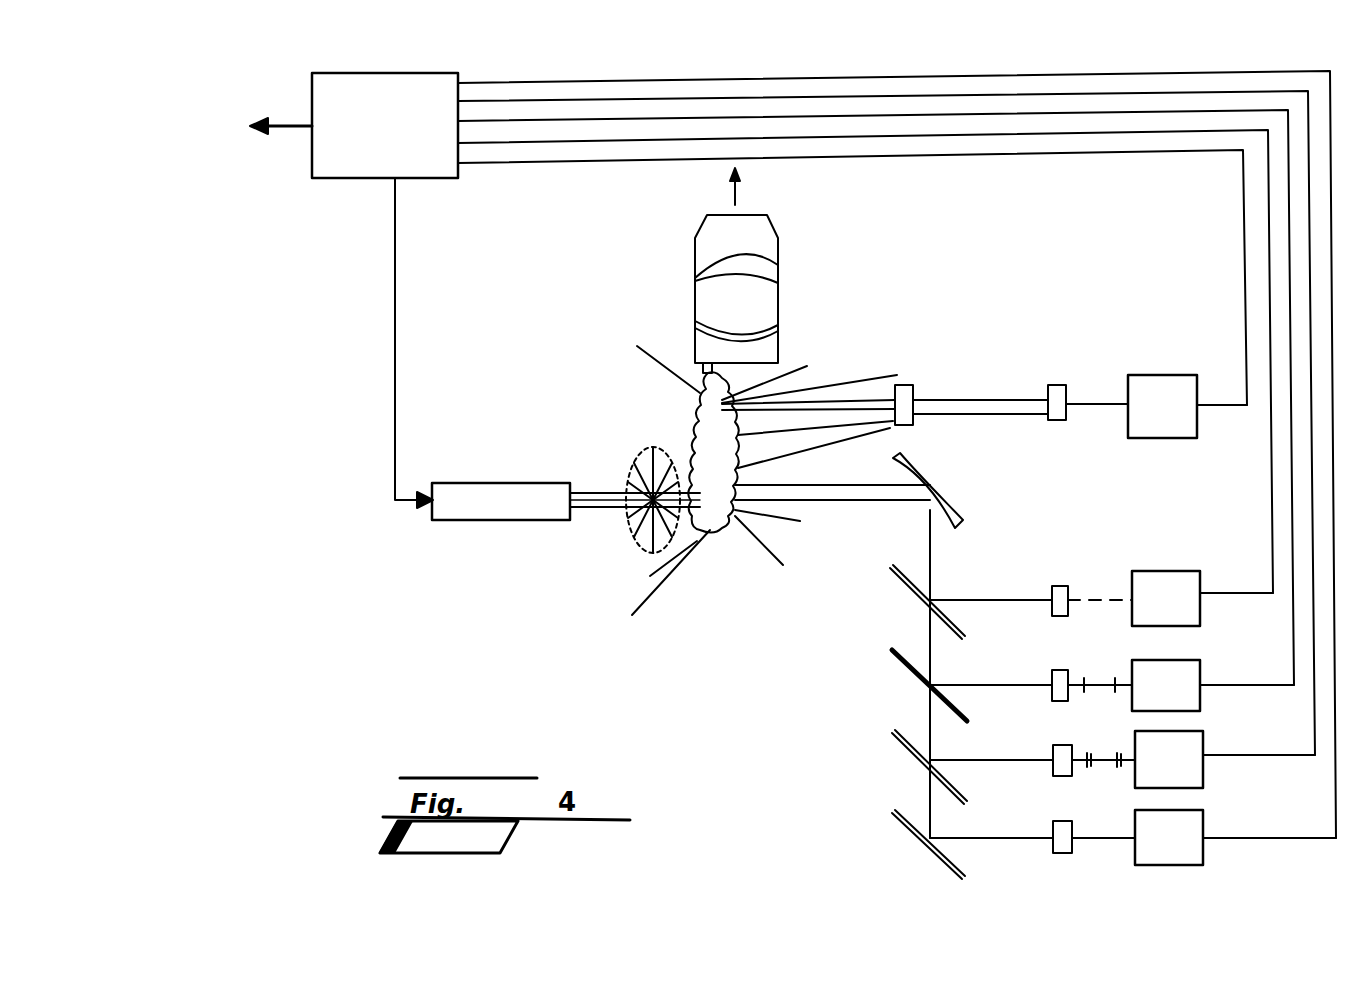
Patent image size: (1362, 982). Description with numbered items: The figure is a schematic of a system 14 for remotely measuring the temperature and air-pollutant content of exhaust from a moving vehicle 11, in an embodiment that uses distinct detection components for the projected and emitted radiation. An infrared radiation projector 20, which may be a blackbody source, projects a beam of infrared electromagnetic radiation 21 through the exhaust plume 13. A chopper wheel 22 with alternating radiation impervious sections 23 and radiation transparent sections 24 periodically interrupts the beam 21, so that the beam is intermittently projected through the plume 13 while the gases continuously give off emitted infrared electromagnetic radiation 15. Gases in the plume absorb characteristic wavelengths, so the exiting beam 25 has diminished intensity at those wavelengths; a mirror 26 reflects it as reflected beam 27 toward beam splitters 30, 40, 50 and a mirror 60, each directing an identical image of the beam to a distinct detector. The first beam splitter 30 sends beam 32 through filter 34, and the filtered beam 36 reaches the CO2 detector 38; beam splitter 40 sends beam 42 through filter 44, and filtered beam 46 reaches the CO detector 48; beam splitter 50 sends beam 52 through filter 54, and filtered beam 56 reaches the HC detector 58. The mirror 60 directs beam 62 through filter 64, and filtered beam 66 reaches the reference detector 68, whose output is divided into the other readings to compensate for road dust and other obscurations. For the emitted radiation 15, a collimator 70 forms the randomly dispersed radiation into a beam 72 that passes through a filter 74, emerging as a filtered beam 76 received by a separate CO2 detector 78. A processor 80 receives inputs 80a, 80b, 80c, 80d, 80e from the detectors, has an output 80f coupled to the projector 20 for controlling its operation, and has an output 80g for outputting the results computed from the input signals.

The moving vehicle 11 is at (778, 268).
The plume 13 is at (697, 400).
The system for remotely measuring temperature and air-pollutant content of vehicle e 14 is at (1052, 235).
The emitted infrared electromagnetic radiation 15 is at (658, 350).
The infrared radiation projector 20 is at (477, 486).
The beam of infrared electromagnetic radiation 21 is at (607, 487).
The chopper wheel 22 is at (662, 452).
The radiation impervious sections 23 is at (645, 548).
The radiation transparent sections 24 is at (623, 589).
The exiting beam 25 is at (884, 508).
The mirror 26 is at (927, 462).
The reflected beam 27 is at (935, 560).
The first beam splitter 30 is at (893, 570).
The beam 32 is at (990, 600).
The filter 34 is at (1050, 608).
The filtered beam 36 is at (1090, 600).
The CO2 detector 38 is at (1200, 573).
The beam splitter 40 is at (905, 685).
The beam 42 is at (950, 687).
The filter 44 is at (1052, 703).
The filtered beam 46 is at (1097, 684).
The CO detector 48 is at (1203, 662).
The beam splitter 50 is at (912, 748).
The beam 52 is at (953, 763).
The filter 54 is at (1055, 777).
The filtered beam 56 is at (1108, 762).
The HC detector 58 is at (1203, 786).
The mirror 60 is at (905, 835).
The beam 62 is at (957, 840).
The filter 64 is at (1053, 855).
The filtered beam 66 is at (1113, 840).
The reference detector 68 is at (1200, 812).
The collimator 70 is at (912, 388).
The beam 72 is at (973, 398).
The filter 74 is at (1055, 425).
The reference detector path 76 is at (1095, 405).
The CO2 detector 78 is at (1170, 377).
The processor 80 is at (408, 146).
The input 80a is at (525, 146).
The input 80b is at (584, 126).
The input 80c is at (595, 98).
The input 80d is at (496, 84).
The input 80e is at (481, 167).
The output 80f is at (393, 448).
The output 80g is at (267, 106).